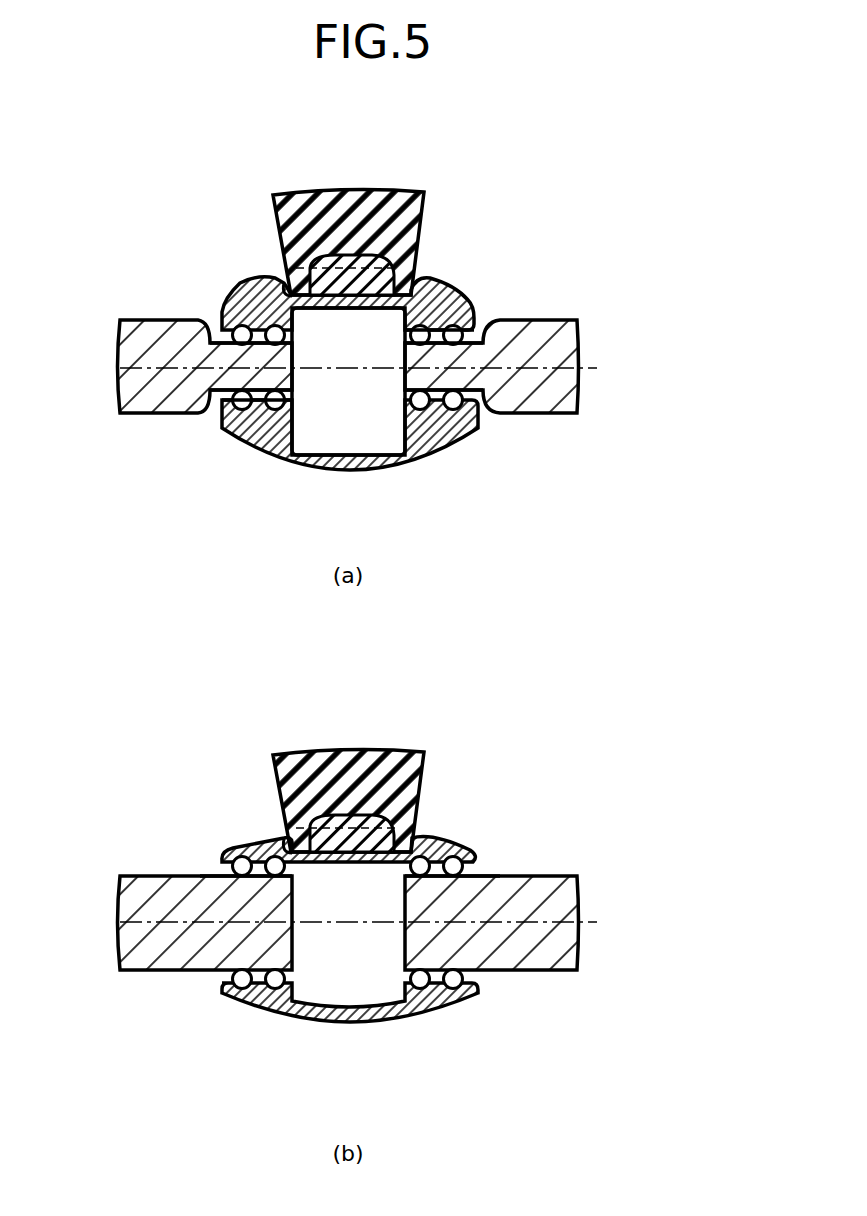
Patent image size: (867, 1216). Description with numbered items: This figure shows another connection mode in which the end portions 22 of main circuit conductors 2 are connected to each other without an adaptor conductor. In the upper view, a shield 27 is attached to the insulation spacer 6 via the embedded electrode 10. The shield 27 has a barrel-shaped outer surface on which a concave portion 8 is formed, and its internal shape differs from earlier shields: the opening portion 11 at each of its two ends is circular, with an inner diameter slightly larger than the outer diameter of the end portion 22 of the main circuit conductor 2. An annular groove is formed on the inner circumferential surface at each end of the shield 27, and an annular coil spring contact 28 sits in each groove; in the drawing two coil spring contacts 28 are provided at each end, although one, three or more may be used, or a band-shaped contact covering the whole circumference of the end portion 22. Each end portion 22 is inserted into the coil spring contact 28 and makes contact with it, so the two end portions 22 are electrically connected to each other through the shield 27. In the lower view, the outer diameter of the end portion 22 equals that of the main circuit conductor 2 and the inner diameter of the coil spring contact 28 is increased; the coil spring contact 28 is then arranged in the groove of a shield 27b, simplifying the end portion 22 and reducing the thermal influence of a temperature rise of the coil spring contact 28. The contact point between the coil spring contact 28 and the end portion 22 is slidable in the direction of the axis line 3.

The main circuit conductor 2 is at (150, 404).
The axis line 3 is at (583, 364).
The insulation spacer 6 is at (397, 214).
The concave portion 8 is at (286, 288).
The embedded electrode 10 is at (355, 262).
The opening portion 11 is at (482, 330).
The end portion 22 is at (220, 352).
The shield 27 is at (460, 298).
The shield 27b is at (478, 862).
The coil spring contact 28 is at (243, 405).